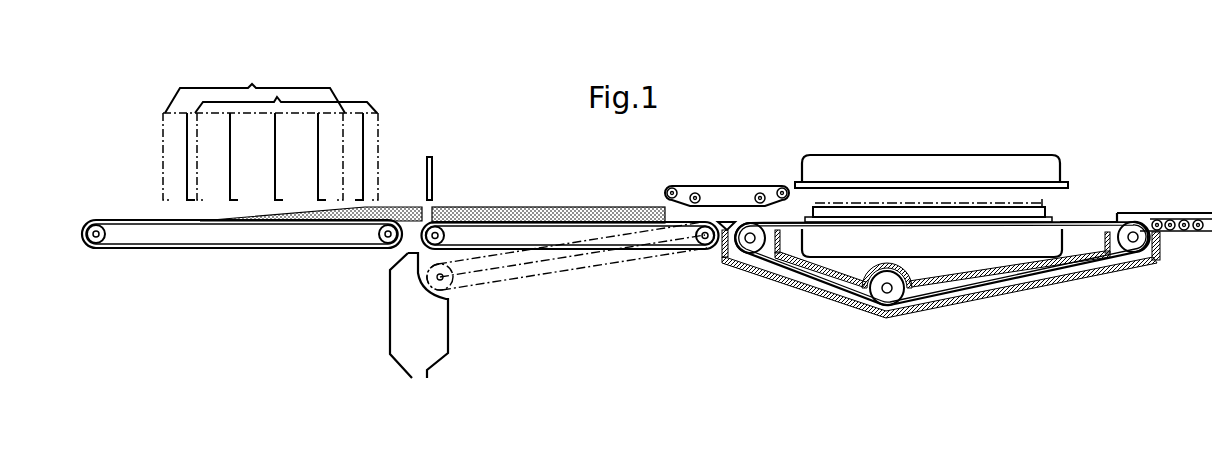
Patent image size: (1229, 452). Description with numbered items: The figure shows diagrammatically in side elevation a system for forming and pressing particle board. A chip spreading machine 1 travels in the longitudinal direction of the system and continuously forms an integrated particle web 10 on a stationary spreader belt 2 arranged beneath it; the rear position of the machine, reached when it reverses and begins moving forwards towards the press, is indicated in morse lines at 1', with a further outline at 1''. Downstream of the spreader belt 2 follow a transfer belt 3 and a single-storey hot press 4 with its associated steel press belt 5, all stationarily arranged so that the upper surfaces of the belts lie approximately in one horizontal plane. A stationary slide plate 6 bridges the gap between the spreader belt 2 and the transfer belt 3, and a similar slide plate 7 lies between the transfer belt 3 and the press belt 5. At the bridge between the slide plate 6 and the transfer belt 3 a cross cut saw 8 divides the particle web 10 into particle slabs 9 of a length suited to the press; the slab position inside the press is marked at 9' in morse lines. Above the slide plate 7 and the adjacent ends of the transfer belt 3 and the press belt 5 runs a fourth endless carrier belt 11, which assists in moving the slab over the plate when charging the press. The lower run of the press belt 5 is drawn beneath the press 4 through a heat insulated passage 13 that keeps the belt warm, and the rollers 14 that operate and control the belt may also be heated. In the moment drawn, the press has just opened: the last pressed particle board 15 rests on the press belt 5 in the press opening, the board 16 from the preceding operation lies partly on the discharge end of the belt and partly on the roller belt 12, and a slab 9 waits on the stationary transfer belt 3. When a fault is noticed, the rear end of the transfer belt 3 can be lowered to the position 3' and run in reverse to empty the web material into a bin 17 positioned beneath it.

The chip spreading machine 1 is at (275, 128).
The rear position of chip spreading machine 1' is at (270, 125).
The mould lower section 1'' is at (286, 81).
The spreader belt 2 is at (137, 249).
The transfer belt 3 is at (570, 264).
The lowered position of transfer belt 3' is at (567, 274).
The single-storey hot press 4 is at (968, 170).
The press belt 5 is at (1090, 222).
The slide plate 6 is at (406, 236).
The slide plate 7 is at (717, 246).
The cross cut saw 8 is at (433, 173).
The particle slab 9 is at (548, 197).
The layer of material under hood 9' is at (928, 166).
The particle web 10 is at (388, 209).
The carrier belt 11 is at (746, 187).
The roller belt 12 is at (1190, 233).
The heat insulated passage 13 is at (957, 296).
The rollers 14 is at (752, 246).
The pressed particle board 15 is at (897, 216).
The particle board 16 is at (1183, 215).
The bin 17 is at (400, 331).